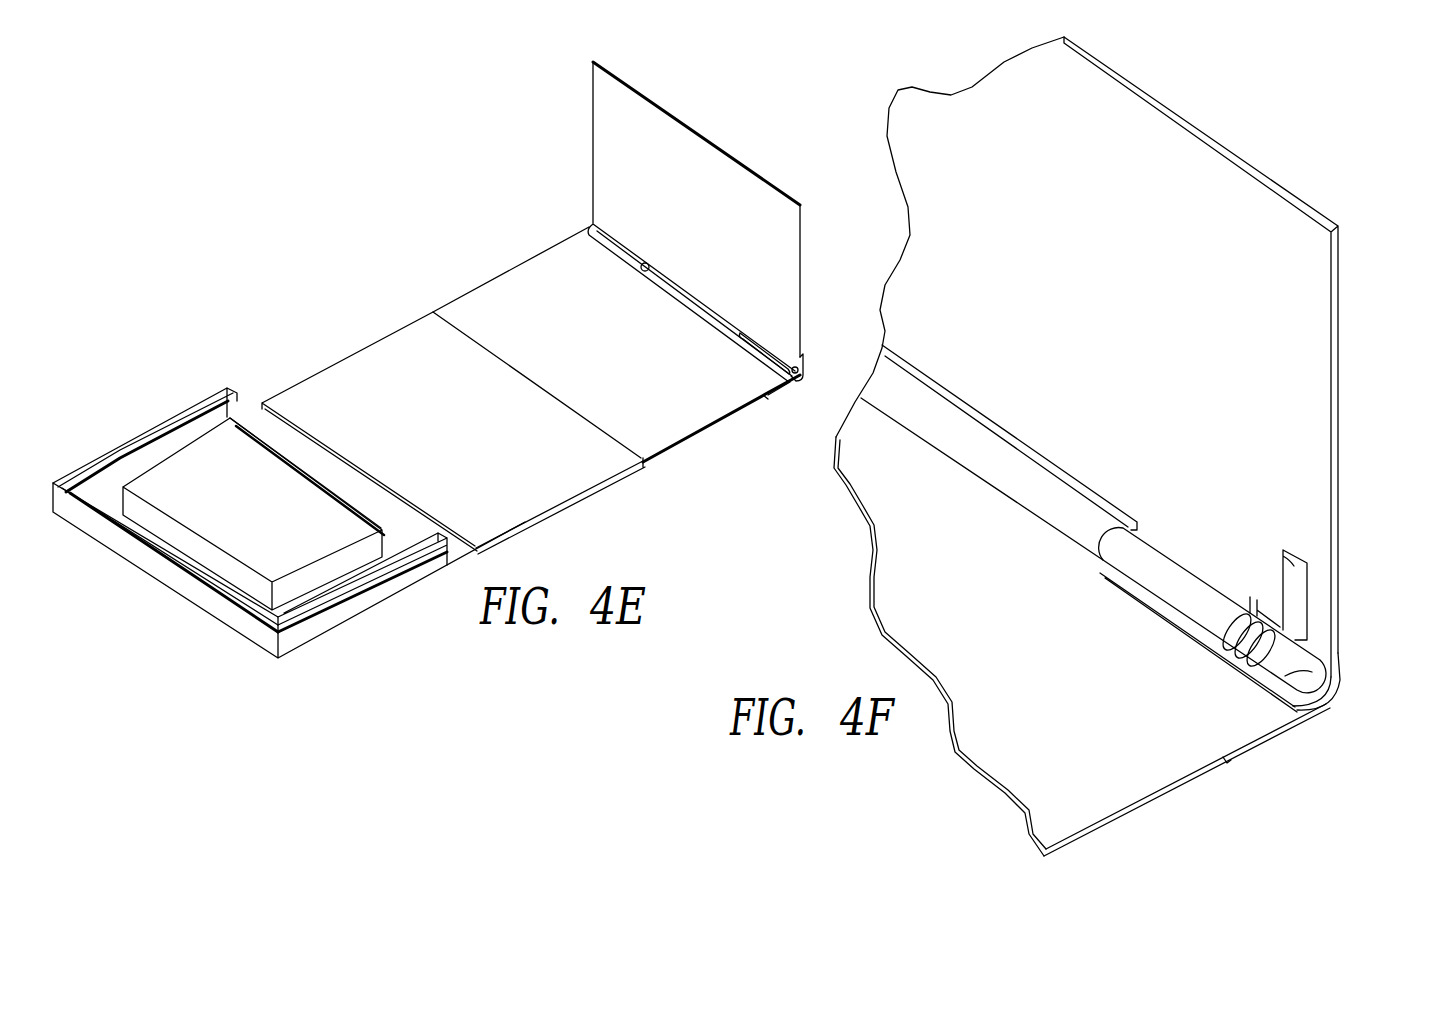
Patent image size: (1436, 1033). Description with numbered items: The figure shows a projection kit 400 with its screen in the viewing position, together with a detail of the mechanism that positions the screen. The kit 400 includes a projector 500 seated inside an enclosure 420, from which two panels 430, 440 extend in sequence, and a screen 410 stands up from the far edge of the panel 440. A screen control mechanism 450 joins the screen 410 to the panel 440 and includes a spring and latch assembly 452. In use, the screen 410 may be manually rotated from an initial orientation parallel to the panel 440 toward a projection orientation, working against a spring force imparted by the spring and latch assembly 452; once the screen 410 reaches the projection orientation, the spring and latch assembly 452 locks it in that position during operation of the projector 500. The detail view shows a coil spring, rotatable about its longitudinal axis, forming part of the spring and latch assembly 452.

In FIG. 4E, the projection kit 400 is at (366, 294).
In FIG. 4E, the screen 410 is at (702, 222).
In FIG. 4F, the screen 410 is at (1107, 308).
In FIG. 4E, the enclosure 420 is at (222, 607).
In FIG. 4E, the panel 430 is at (452, 423).
In FIG. 4E, the panel 440 is at (610, 344).
In FIG. 4F, the panel 440 is at (993, 654).
In FIG. 4F, the screen control mechanism 450 is at (1327, 695).
In FIG. 4F, the spring and latch assembly 452 is at (1267, 627).
In FIG. 4E, the projector 500 is at (338, 560).